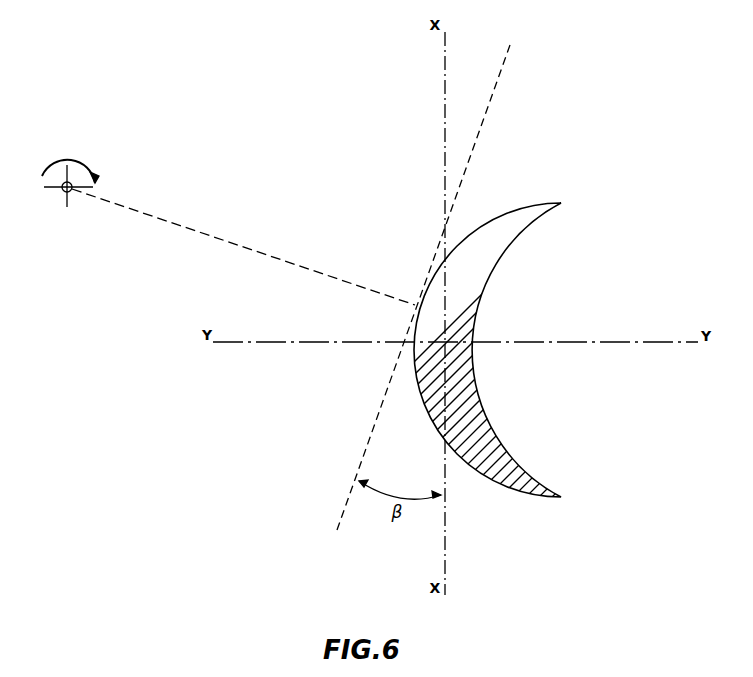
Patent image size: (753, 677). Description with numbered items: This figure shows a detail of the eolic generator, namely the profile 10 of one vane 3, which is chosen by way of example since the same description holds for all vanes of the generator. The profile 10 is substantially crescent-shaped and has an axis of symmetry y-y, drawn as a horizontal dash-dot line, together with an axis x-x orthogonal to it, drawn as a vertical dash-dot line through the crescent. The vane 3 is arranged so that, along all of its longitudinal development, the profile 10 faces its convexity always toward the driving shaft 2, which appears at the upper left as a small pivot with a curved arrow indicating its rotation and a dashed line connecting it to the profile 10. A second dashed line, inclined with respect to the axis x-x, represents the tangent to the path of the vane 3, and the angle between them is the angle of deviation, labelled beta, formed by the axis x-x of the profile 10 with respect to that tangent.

The driving shaft 2 is at (60, 157).
The profile 10 is at (534, 208).
The vane 3 is at (528, 530).